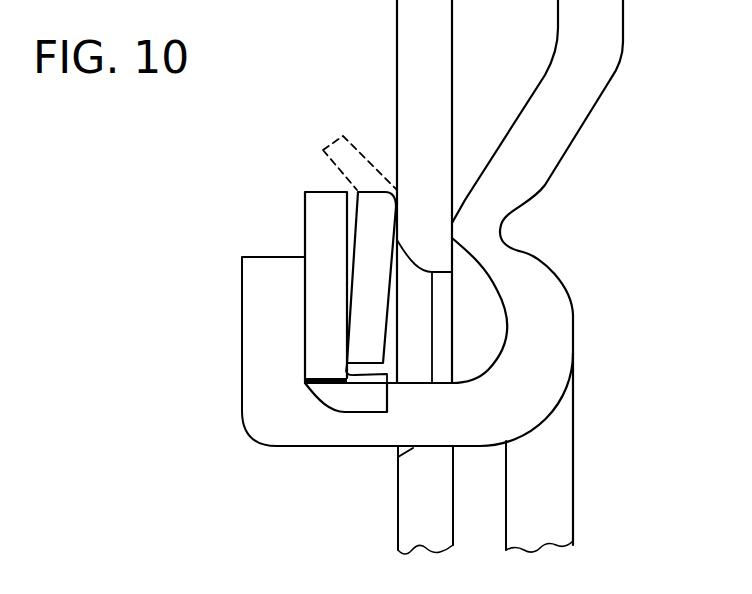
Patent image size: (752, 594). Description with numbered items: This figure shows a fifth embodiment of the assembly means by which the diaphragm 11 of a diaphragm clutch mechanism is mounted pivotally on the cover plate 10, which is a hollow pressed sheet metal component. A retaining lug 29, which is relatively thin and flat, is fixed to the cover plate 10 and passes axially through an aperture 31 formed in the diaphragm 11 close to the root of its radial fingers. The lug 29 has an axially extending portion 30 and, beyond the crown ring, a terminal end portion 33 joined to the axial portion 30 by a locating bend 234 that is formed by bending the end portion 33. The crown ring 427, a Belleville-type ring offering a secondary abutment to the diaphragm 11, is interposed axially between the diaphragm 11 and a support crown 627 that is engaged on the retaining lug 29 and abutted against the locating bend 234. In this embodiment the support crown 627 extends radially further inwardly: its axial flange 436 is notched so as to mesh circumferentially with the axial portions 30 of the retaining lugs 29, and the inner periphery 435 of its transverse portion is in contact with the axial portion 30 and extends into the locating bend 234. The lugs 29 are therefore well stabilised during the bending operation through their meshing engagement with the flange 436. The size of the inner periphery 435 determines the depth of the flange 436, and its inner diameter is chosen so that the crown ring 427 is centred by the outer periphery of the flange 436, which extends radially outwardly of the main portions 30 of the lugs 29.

The cover plate 10 is at (601, 104).
The diaphragm 11 is at (397, 50).
The retaining lug 29 is at (299, 451).
The axial portion 30 is at (342, 448).
The aperture 31 is at (438, 273).
The terminal end portion 33 is at (242, 309).
The locating bend 234 is at (298, 417).
The crown ring 427 is at (357, 191).
The inner periphery 435 is at (312, 383).
The axial flange 436 is at (365, 413).
The support crown 627 is at (305, 238).